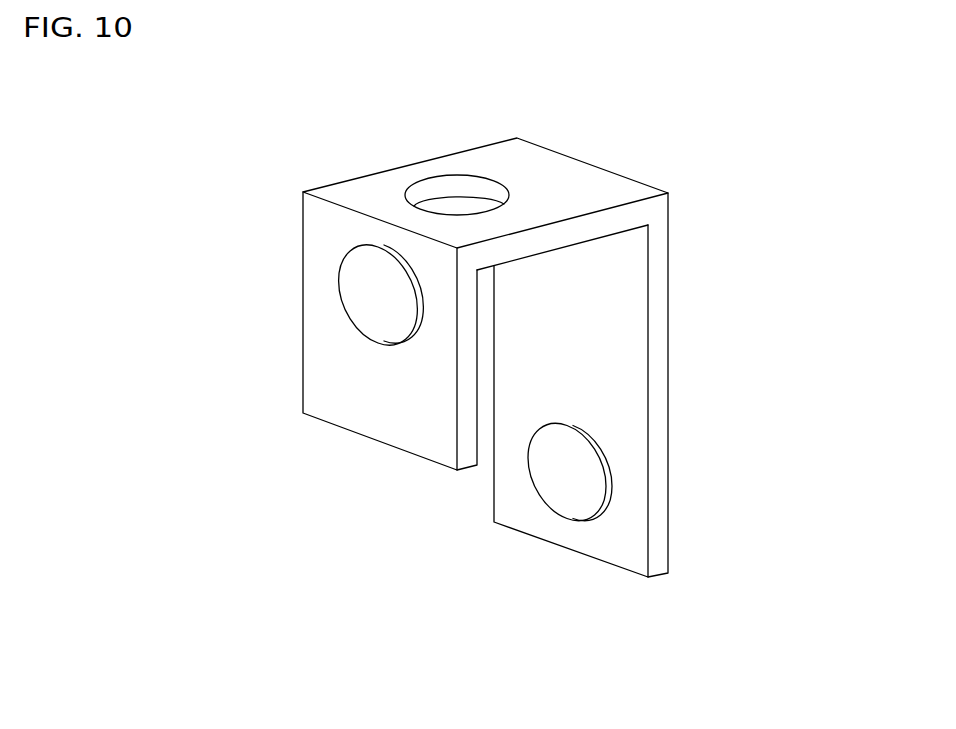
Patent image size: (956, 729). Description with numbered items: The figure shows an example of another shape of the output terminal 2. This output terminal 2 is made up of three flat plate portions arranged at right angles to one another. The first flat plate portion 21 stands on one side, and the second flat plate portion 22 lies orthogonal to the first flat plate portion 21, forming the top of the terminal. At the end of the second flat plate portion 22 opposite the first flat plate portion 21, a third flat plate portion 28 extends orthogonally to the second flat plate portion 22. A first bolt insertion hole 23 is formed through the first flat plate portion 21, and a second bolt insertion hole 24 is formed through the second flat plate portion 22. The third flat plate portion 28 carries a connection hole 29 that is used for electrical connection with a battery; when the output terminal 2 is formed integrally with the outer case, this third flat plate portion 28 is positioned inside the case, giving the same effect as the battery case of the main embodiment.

The output terminal 2 is at (322, 145).
The first flat plate portion 21 is at (350, 371).
The second flat plate portion 22 is at (548, 178).
The first bolt insertion hole 23 is at (360, 291).
The second bolt insertion hole 24 is at (458, 192).
The third flat plate portion 28 is at (668, 360).
The connection hole 29 is at (560, 488).